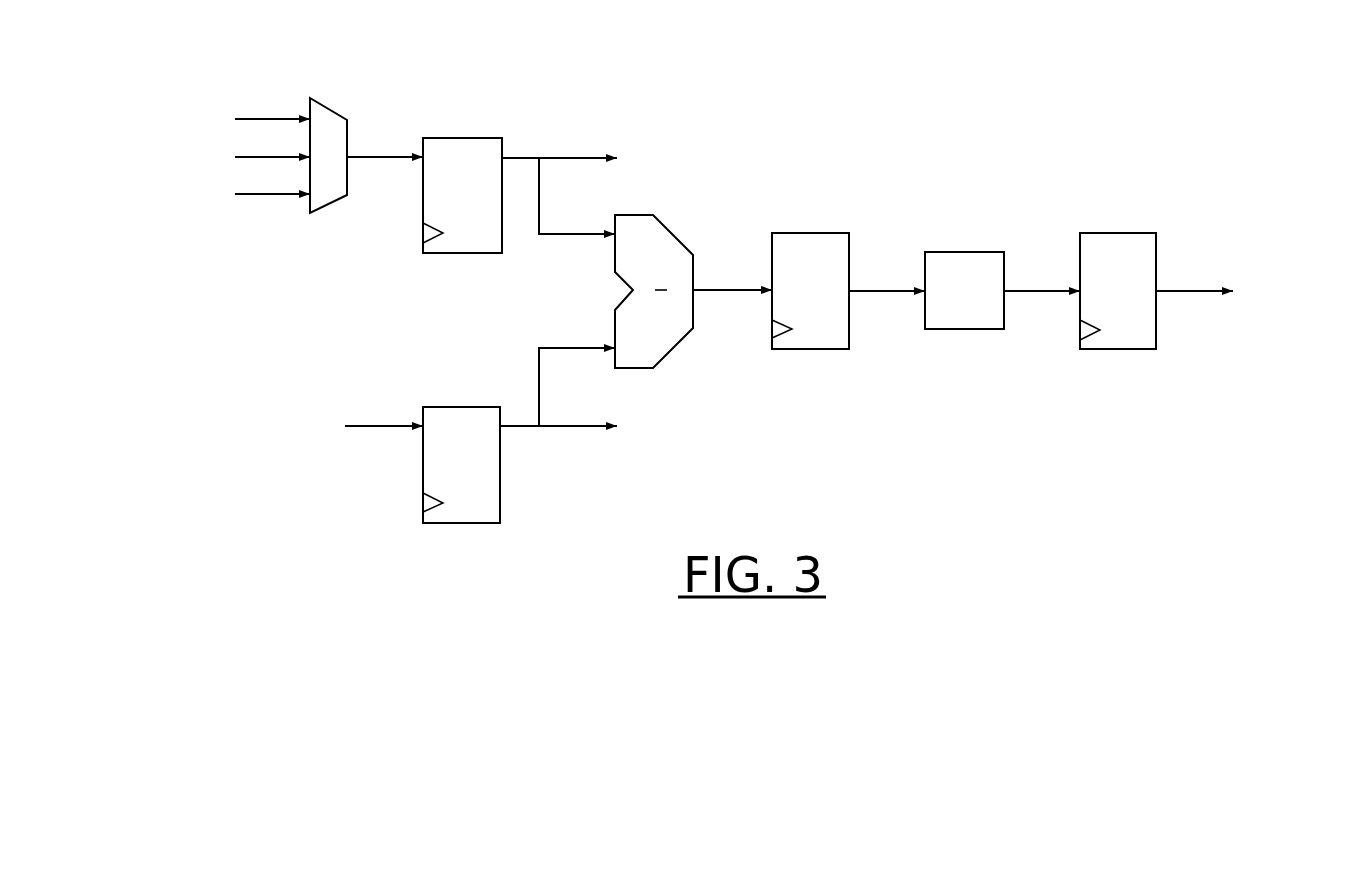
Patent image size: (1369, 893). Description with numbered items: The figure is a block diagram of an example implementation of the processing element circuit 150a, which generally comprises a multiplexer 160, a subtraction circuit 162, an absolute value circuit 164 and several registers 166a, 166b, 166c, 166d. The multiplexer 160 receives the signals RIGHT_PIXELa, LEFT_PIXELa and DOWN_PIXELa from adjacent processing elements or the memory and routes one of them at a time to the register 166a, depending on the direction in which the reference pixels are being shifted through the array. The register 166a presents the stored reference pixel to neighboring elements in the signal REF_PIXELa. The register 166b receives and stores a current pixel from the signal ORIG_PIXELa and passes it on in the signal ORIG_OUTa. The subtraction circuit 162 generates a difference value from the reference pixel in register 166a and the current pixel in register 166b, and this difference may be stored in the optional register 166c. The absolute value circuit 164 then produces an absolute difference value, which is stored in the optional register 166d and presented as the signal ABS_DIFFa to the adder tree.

The processing element circuit 150a is at (250, 60).
The multiplexer 160 is at (327, 102).
The register 166a is at (463, 138).
The register 166b is at (463, 407).
The subtraction circuit 162 is at (673, 230).
The register 166c is at (810, 233).
The absolute value circuit 164 is at (963, 252).
The register 166d is at (1115, 233).